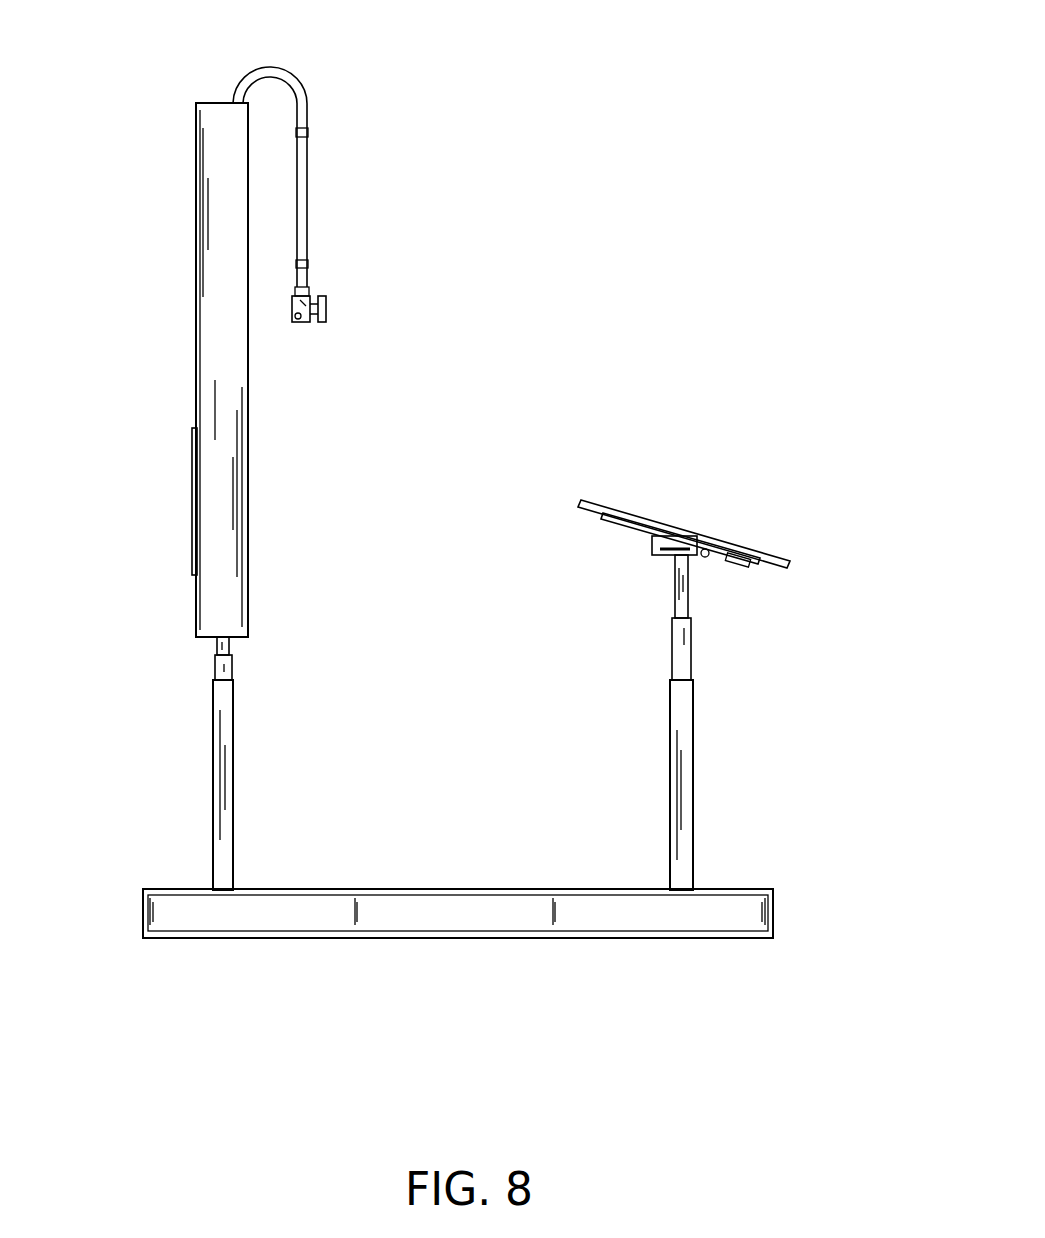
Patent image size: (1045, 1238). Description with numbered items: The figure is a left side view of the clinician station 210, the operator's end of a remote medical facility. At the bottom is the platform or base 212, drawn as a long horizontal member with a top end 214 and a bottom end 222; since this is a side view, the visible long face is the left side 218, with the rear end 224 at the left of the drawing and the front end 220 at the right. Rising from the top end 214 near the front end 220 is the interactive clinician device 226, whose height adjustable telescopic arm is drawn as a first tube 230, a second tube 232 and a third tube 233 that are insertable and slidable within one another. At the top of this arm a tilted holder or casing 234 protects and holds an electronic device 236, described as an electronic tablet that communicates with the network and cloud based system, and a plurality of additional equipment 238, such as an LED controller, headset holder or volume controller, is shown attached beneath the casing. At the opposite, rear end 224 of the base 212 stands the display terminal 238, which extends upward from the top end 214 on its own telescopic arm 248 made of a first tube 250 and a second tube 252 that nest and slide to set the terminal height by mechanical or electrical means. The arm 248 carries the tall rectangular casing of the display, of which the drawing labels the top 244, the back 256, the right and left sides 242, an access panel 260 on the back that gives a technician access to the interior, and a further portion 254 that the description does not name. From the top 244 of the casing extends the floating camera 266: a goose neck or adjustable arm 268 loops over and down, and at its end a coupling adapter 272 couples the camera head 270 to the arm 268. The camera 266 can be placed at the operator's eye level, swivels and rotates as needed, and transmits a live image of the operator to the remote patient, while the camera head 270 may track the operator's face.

The clinician station 210 is at (612, 172).
The base 212 is at (370, 842).
The top end 214 is at (517, 888).
The left side 218 is at (455, 920).
The front end 220 is at (790, 920).
The bottom end 222 is at (640, 940).
The rear end 224 is at (143, 913).
The interactive clinician device 226 is at (634, 472).
The first tube 230 is at (693, 770).
The second tube 232 is at (672, 660).
The upper pole segment 233 is at (675, 598).
The holder or casing 234 is at (765, 548).
The electronic device 236 is at (675, 528).
The display terminal 238 is at (288, 460).
The right and left sides 242 is at (237, 355).
The top 244 is at (213, 103).
The telescopic arm 248 is at (168, 800).
The first tube 250 is at (233, 780).
The second tube 252 is at (232, 655).
The tube body 254 is at (248, 560).
The back 256 is at (196, 608).
The access panel 260 is at (190, 502).
The floating camera 266 is at (388, 214).
The adjustable arm 268 is at (308, 165).
The camera head 270 is at (327, 310).
The coupling adapter 272 is at (303, 302).